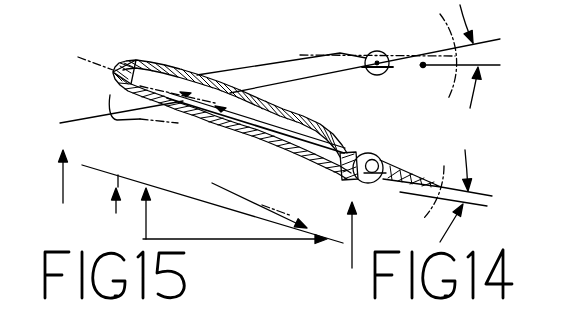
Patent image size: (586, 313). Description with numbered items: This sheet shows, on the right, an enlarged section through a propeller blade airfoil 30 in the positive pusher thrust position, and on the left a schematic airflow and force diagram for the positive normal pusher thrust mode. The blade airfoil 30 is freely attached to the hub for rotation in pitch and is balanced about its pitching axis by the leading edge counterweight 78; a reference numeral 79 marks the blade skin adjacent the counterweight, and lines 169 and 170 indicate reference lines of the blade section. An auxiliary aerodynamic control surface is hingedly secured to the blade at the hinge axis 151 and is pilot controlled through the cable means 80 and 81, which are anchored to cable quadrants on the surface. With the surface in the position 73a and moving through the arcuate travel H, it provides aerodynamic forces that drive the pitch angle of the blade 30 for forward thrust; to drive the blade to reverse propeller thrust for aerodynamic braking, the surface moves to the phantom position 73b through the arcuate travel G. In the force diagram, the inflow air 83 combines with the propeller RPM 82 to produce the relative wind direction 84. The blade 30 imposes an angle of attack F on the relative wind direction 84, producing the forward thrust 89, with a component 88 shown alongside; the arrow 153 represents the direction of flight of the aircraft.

In FIG. 14, the blade airfoil 30 is at (293, 68).
In FIG. 15, the blade airfoil 30 is at (196, 106).
In FIG. 14, the leading edge counterweight 78 is at (122, 63).
In FIG. 14, the upper skin 79 is at (160, 63).
In FIG. 14, the cable means 80 is at (312, 129).
In FIG. 14, the cable means 81 is at (324, 170).
In FIG. 14, the hinge axis 151 is at (378, 62).
In FIG. 14, the arrows 153 is at (356, 234).
In FIG. 14, the control surface position 73a is at (402, 172).
In FIG. 14, the control surface position 73b is at (427, 69).
In FIG. 15, the propeller RPM 82 is at (277, 241).
In FIG. 15, the inflow air 83 is at (143, 224).
In FIG. 15, the relative wind direction 84 is at (212, 183).
In FIG. 15, the lift component 88 is at (112, 203).
In FIG. 15, the forward thrust 89 is at (58, 170).
In FIG. 15, the reference line 169 is at (84, 118).
In FIG. 15, the chord line 170 is at (66, 54).
In FIG. 14, the arcuate travel G is at (465, 56).
In FIG. 14, the arcuate travel H is at (443, 196).
In FIG. 15, the angle of attack F is at (120, 172).